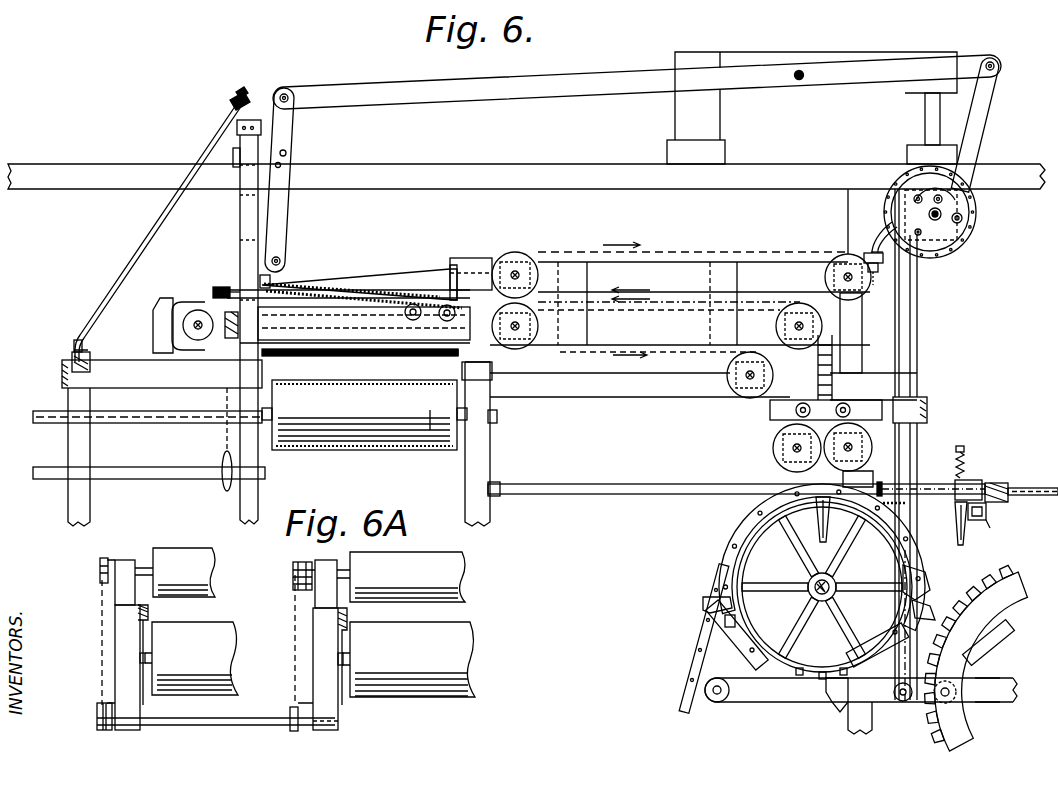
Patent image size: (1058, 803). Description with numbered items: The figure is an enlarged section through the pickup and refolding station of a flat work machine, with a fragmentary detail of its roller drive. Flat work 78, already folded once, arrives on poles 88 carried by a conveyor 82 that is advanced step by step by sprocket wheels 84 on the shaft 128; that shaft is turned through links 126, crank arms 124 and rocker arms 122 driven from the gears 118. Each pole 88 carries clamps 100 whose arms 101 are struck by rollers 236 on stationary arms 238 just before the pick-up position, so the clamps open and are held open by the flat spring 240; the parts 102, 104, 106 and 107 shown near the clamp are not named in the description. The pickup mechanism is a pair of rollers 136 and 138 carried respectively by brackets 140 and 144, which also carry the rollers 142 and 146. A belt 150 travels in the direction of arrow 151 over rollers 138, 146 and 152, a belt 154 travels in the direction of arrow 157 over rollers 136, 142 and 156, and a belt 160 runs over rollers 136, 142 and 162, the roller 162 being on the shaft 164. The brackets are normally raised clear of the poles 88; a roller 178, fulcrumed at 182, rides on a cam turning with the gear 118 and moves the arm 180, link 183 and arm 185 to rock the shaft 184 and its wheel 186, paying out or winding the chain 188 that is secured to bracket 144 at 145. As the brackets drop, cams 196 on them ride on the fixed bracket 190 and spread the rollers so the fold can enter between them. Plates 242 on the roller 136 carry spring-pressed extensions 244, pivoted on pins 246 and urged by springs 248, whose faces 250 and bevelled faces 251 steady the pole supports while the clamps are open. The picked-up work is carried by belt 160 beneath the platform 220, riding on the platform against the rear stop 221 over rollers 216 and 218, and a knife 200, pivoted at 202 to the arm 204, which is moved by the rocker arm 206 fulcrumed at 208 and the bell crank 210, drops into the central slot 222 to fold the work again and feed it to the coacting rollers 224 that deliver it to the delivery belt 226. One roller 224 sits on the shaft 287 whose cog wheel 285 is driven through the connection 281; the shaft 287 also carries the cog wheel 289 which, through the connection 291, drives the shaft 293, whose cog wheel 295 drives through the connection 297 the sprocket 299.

In FIG. 6, the flat work 78 is at (374, 280).
In FIG. 6, the conveyor 82 is at (678, 695).
In FIG. 6, the sprocket wheels 84 is at (722, 580).
In FIG. 6, the poles 88 is at (966, 540).
In FIG. 6, the clamps 100 is at (980, 482).
In FIG. 6, the arms 101 is at (990, 508).
In FIG. 6, the stop 102 is at (964, 450).
In FIG. 6, the spring 104 is at (968, 470).
In FIG. 6, the latch 106 is at (988, 518).
In FIG. 6, the rod 107 is at (1005, 488).
In FIG. 6, the gears 118 is at (1002, 598).
In FIG. 6, the rocker arms 122 is at (1000, 695).
In FIG. 6, the crank arms 124 is at (783, 702).
In FIG. 6, the links 126 is at (716, 702).
In FIG. 6, the shaft 128 is at (840, 586).
In FIG. 6, the roller 136 is at (775, 462).
In FIG. 6, the roller 138 is at (874, 447).
In FIG. 6, the bracket 140 is at (740, 392).
In FIG. 6, the roller 142 is at (782, 310).
In FIG. 6, the bracket 144 is at (850, 355).
In FIG. 6, the attachment point 145 is at (882, 262).
In FIG. 6, the roller 146 is at (832, 266).
In FIG. 6, the belt 150 is at (680, 246).
In FIG. 6, the arrow 151 is at (618, 250).
In FIG. 6, the roller 152 is at (520, 262).
In FIG. 6, the belt 154 is at (655, 312).
In FIG. 6, the roller 156 is at (525, 345).
In FIG. 6, the arrow 157 is at (645, 305).
In FIG. 6, the belt 160 is at (372, 318).
In FIG. 6, the roller 162 is at (185, 310).
In FIG. 6, the shaft 164 is at (183, 325).
In FIG. 6, the roller 178 is at (870, 722).
In FIG. 6, the arm 180 is at (912, 322).
In FIG. 6, the fulcrum 182 is at (922, 236).
In FIG. 6, the link 183 is at (915, 199).
In FIG. 6, the rock shaft 184 is at (960, 212).
In FIG. 6, the arm 185 is at (942, 210).
In FIG. 6, the wheel 186 is at (950, 230).
In FIG. 6, the chain 188 is at (872, 234).
In FIG. 6, the bracket 190 is at (915, 396).
In FIG. 6, the cams 196 is at (840, 380).
In FIG. 6, the knife 200 is at (372, 265).
In FIG. 6, the pivot 202 is at (282, 258).
In FIG. 6, the arm 204 is at (278, 122).
In FIG. 6, the rocker arm 206 is at (548, 100).
In FIG. 6, the fulcrum 208 is at (799, 70).
In FIG. 6, the bell crank 210 is at (975, 130).
In FIG. 6, the roller 216 is at (440, 352).
In FIG. 6, the roller 218 is at (345, 350).
In FIG. 6, the platform 220 is at (215, 287).
In FIG. 6, the rear stop 221 is at (258, 278).
In FIG. 6, the central slot 222 is at (335, 288).
In FIG. 6, the rollers 224 is at (297, 385).
In FIG. 6A, the rollers 224 is at (300, 575).
In FIG. 6, the delivery belt 226 is at (430, 397).
In FIG. 6A, the delivery belt 226 is at (310, 659).
In FIG. 6, the rollers 236 is at (900, 502).
In FIG. 6, the stationary arms 238 is at (638, 496).
In FIG. 6, the flat spring 240 is at (880, 477).
In FIG. 6, the plates 242 is at (712, 652).
In FIG. 6, the extensions 244 is at (703, 602).
In FIG. 6, the pins 246 is at (722, 638).
In FIG. 6, the springs 248 is at (722, 620).
In FIG. 6, the faces 250 is at (928, 572).
In FIG. 6, the bevelled face 251 is at (932, 610).
In FIG. 6A, the connection 281 is at (292, 563).
In FIG. 6A, the cog wheel 285 is at (292, 575).
In FIG. 6, the shaft 287 is at (228, 362).
In FIG. 6A, the shaft 287 is at (345, 575).
In FIG. 6A, the cog wheel 289 is at (292, 586).
In FIG. 6, the connection 291 is at (220, 400).
In FIG. 6A, the connection 291 is at (292, 634).
In FIG. 6, the shaft 293 is at (180, 481).
In FIG. 6A, the shaft 293 is at (198, 730).
In FIG. 6A, the cog wheel 295 is at (95, 723).
In FIG. 6A, the connection 297 is at (100, 650).
In FIG. 6A, the sprocket 299 is at (103, 580).